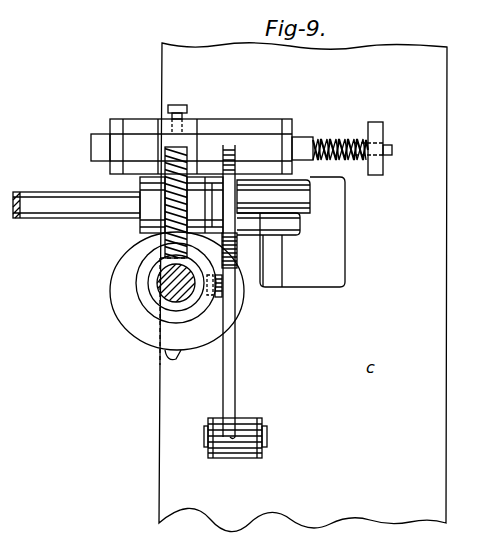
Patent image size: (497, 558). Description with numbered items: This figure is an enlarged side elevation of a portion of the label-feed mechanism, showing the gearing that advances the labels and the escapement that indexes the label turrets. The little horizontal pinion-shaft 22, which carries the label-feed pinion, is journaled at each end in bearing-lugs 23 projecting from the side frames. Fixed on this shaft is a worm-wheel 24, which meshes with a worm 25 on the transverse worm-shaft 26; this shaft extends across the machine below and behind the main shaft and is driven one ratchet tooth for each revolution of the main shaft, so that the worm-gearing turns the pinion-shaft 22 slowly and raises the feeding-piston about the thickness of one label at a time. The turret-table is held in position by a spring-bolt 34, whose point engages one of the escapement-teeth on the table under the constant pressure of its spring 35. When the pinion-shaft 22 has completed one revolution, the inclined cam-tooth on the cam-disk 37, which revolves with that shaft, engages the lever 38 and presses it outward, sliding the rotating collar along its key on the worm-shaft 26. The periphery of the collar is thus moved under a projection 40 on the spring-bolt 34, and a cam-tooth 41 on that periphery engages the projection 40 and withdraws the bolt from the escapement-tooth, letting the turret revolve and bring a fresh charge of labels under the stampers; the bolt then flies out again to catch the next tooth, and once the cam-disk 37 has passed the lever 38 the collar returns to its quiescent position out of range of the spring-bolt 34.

The pinion-shaft 22 is at (76, 205).
The bearing-lugs 23 is at (291, 232).
The worm-wheel 24 is at (181, 205).
The worm 25 is at (157, 284).
The worm-shaft 26 is at (303, 266).
The spring-bolt 34 is at (91, 150).
The spring 35 is at (352, 148).
The cam-disk 37 is at (232, 255).
The lever 38 is at (236, 346).
The projection 40 is at (140, 226).
The cam-tooth 41 is at (170, 360).